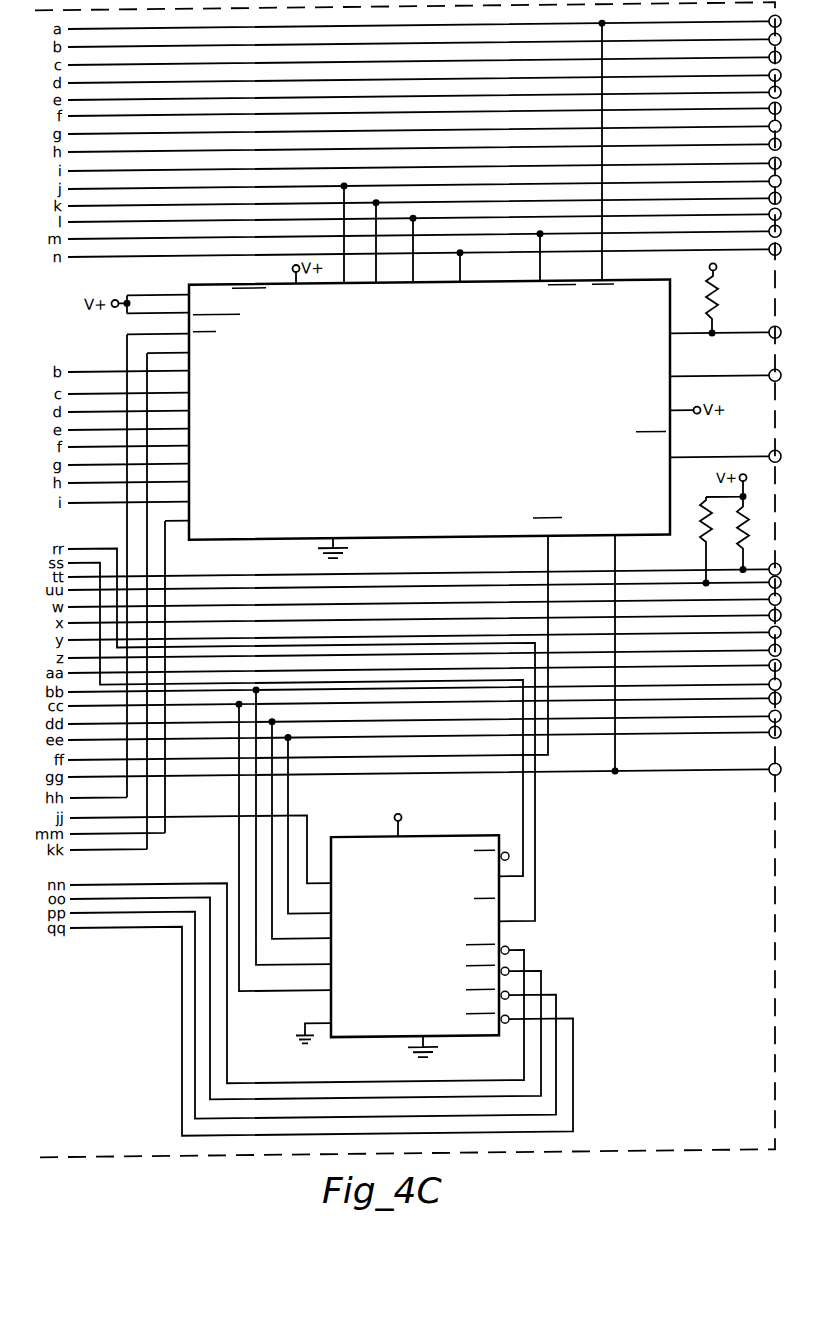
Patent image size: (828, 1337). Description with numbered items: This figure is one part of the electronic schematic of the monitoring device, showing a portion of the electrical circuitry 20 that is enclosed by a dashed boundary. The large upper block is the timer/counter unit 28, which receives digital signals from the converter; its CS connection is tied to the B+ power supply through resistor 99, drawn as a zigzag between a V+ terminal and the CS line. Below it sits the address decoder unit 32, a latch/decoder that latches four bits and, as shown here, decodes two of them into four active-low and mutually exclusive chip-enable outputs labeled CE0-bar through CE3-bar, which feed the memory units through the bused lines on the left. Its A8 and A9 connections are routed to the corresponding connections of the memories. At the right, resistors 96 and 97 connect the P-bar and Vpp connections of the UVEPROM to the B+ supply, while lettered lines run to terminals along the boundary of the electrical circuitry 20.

The electrical circuitry 20 is at (117, 1158).
The timer/counter unit 28 is at (462, 541).
The address decoder unit 32 is at (467, 840).
The resistor 96 is at (736, 527).
The resistor 97 is at (704, 551).
The resistor 99 is at (718, 306).